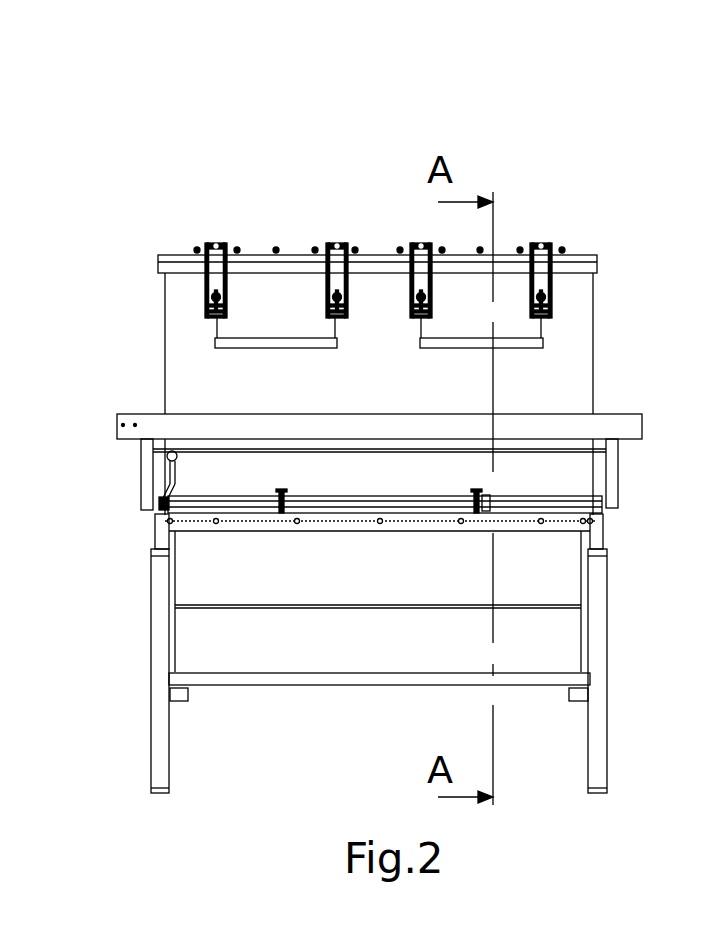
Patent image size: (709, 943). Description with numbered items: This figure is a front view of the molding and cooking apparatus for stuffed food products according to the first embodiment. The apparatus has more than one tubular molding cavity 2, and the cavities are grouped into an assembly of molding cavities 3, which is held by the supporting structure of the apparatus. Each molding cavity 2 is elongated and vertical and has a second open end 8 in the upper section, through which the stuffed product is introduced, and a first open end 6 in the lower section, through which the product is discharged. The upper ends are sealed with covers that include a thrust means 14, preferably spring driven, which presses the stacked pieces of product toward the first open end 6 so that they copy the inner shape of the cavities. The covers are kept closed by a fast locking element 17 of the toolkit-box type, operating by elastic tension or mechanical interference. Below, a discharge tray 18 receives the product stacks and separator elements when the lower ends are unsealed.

The molding cavity 2 is at (92, 260).
The assembly of molding cavities 3 is at (608, 347).
The first open end 6 is at (136, 487).
The second open end 8 is at (136, 261).
The thrust means 14 is at (316, 250).
The fast locking element 17 is at (560, 298).
The discharge tray 18 is at (553, 660).